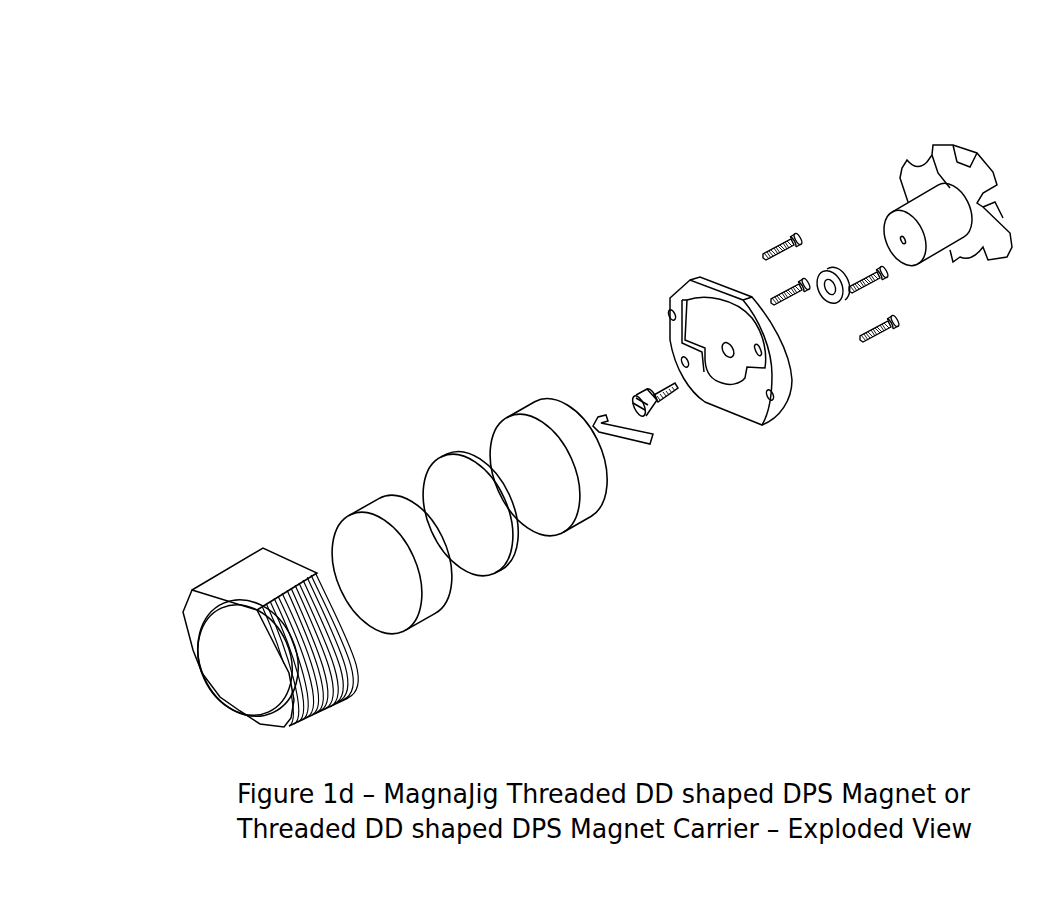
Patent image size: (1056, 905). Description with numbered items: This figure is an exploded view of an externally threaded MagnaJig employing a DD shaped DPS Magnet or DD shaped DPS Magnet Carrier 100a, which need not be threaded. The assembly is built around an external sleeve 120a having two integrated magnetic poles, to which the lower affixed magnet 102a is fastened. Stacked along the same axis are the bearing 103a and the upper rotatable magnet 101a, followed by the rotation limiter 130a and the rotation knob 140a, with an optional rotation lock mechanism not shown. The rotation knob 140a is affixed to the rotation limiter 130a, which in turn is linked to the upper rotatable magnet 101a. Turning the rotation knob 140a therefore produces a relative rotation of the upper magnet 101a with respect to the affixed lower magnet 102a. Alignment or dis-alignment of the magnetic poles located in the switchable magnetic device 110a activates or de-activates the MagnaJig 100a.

The DD shaped DPS Magnet Carrier 100a is at (867, 33).
The switchable magnetic device 110a is at (552, 383).
The external sleeve 120a is at (352, 694).
The lower affixed magnet 102a is at (431, 602).
The bearing 103a is at (515, 549).
The upper rotatable magnet 101a is at (588, 489).
The rotation limiter 130a is at (803, 360).
The rotation knob 140a is at (917, 164).